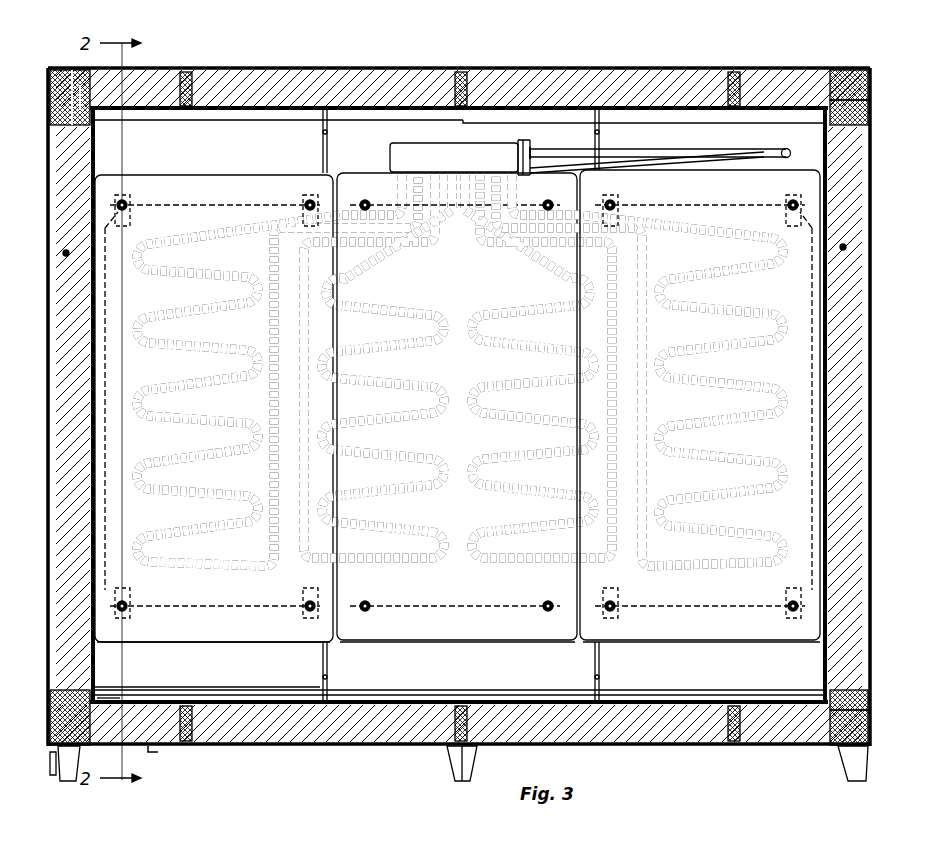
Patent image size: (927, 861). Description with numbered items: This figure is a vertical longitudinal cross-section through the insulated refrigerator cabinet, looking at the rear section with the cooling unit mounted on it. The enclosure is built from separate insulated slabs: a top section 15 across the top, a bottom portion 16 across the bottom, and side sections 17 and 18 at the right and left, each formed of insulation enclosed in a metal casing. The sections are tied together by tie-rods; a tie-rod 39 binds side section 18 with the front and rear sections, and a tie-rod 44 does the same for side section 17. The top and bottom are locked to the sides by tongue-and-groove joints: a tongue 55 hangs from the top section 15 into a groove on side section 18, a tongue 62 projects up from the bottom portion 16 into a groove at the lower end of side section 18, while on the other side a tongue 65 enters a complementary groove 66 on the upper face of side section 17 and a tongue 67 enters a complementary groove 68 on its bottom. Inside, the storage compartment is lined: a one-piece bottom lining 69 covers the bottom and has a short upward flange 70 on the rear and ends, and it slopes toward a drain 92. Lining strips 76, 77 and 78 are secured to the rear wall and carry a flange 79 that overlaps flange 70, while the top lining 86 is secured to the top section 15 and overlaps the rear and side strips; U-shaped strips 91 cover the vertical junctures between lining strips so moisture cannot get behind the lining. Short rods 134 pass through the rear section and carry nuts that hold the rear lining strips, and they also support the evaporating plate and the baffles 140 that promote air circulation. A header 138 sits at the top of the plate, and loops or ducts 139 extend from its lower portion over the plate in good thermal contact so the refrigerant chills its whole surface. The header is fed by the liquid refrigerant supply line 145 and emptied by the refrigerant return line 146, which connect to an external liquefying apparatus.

The top section 15 is at (370, 62).
The bottom portion 16 is at (459, 741).
The side section 17 is at (856, 386).
The side section 18 is at (56, 380).
The tie-rod 39 is at (66, 253).
The tie-rod 44 is at (843, 247).
The tongue 55 is at (50, 112).
The tongue 62 is at (52, 724).
The tongue 65 is at (868, 104).
The groove 66 is at (868, 120).
The tongue 67 is at (868, 713).
The groove 68 is at (868, 698).
The bottom lining 69 is at (640, 700).
The flange 70 is at (100, 700).
The strip 76 is at (213, 659).
The strip 77 is at (457, 657).
The strip 78 is at (701, 657).
The flange 79 is at (248, 695).
The top lining 86 is at (250, 108).
The U-shaped strip 91 is at (324, 165).
The drain 92 is at (150, 752).
The short rod 134 is at (615, 208).
The header 138 is at (446, 157).
The loops or ducts 139 is at (405, 320).
The baffle 140 is at (192, 183).
The liquid refrigerant supply line 145 is at (684, 165).
The refrigerant return line 146 is at (640, 143).